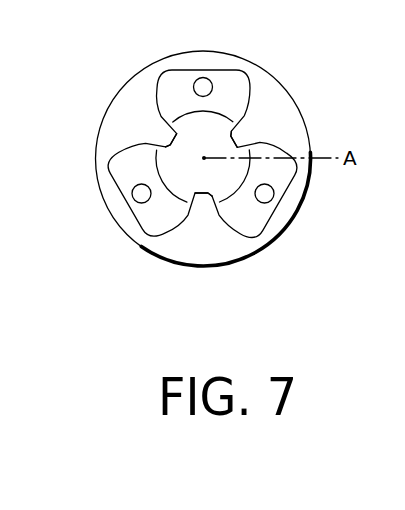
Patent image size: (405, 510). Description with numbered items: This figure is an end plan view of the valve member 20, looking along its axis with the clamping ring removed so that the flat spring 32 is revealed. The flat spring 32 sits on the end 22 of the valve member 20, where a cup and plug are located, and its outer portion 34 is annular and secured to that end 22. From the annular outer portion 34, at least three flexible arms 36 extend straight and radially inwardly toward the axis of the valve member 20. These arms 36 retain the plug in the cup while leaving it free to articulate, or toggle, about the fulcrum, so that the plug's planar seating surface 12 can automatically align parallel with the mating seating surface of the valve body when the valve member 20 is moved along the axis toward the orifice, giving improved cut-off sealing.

The seating surface 12 is at (203, 158).
The valve member 20 is at (202, 159).
The end 22 is at (232, 82).
The flat spring 32 is at (290, 115).
The outer portion 34 is at (292, 207).
The flexible arms 36 is at (179, 128).